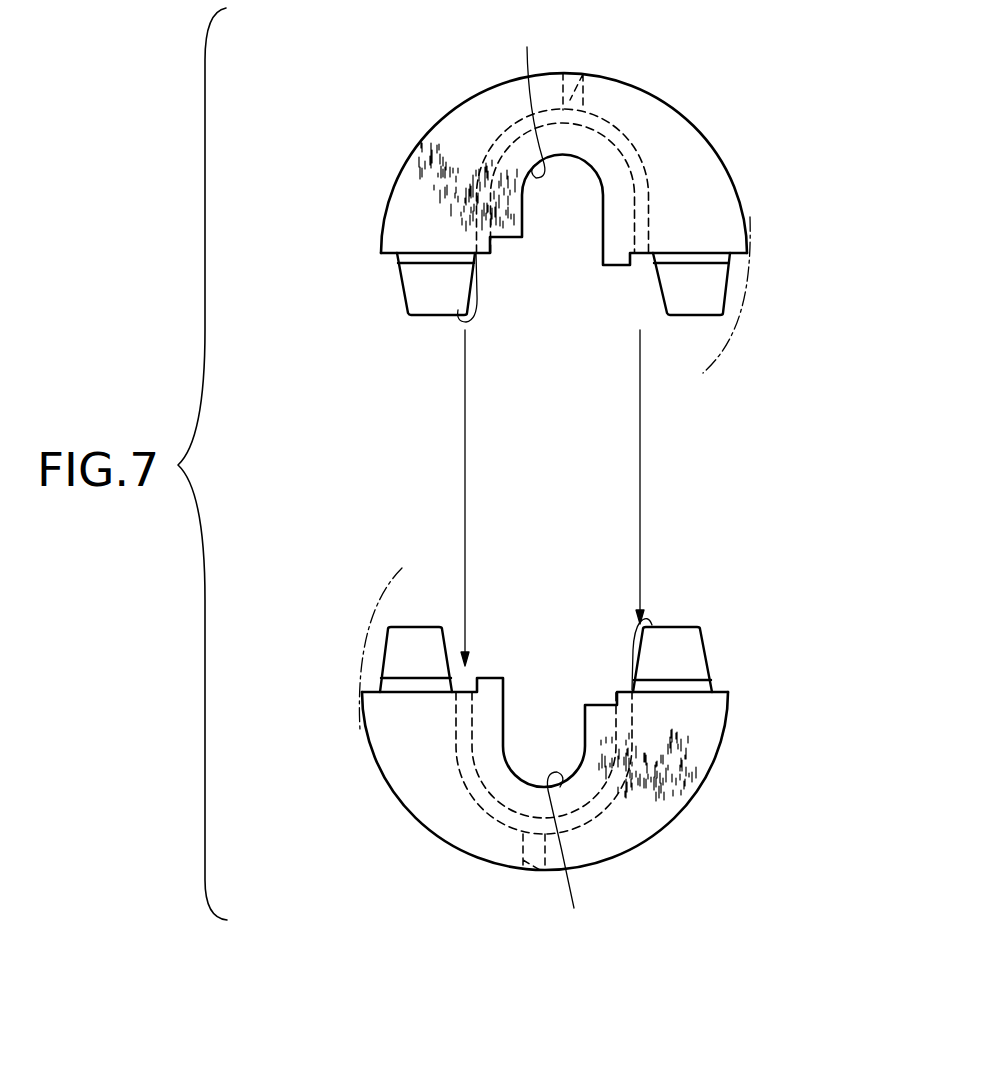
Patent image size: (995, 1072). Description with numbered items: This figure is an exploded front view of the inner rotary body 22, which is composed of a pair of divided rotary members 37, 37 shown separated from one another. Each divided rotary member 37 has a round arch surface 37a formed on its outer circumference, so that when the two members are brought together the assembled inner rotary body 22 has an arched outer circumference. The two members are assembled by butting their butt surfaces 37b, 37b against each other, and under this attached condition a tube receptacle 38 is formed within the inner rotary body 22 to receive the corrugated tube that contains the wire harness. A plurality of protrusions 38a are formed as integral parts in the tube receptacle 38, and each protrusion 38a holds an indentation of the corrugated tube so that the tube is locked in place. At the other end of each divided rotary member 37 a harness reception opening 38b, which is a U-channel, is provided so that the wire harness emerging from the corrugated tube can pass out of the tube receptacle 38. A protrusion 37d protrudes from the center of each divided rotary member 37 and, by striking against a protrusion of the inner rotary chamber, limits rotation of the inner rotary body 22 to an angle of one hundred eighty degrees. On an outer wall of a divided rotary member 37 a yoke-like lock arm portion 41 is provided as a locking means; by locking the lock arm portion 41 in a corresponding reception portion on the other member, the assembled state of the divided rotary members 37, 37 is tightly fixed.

The inner rotary body 22 is at (270, 168).
The divided rotary member 37 is at (745, 175).
The round arch surface 37a is at (672, 100).
The butt surface 37b is at (430, 253).
The protrusion 37d is at (595, 73).
The tube receptacle 38 is at (497, 775).
The protrusion 38a is at (630, 223).
The harness reception opening 38b is at (553, 480).
The lock arm portion 41 is at (472, 300).